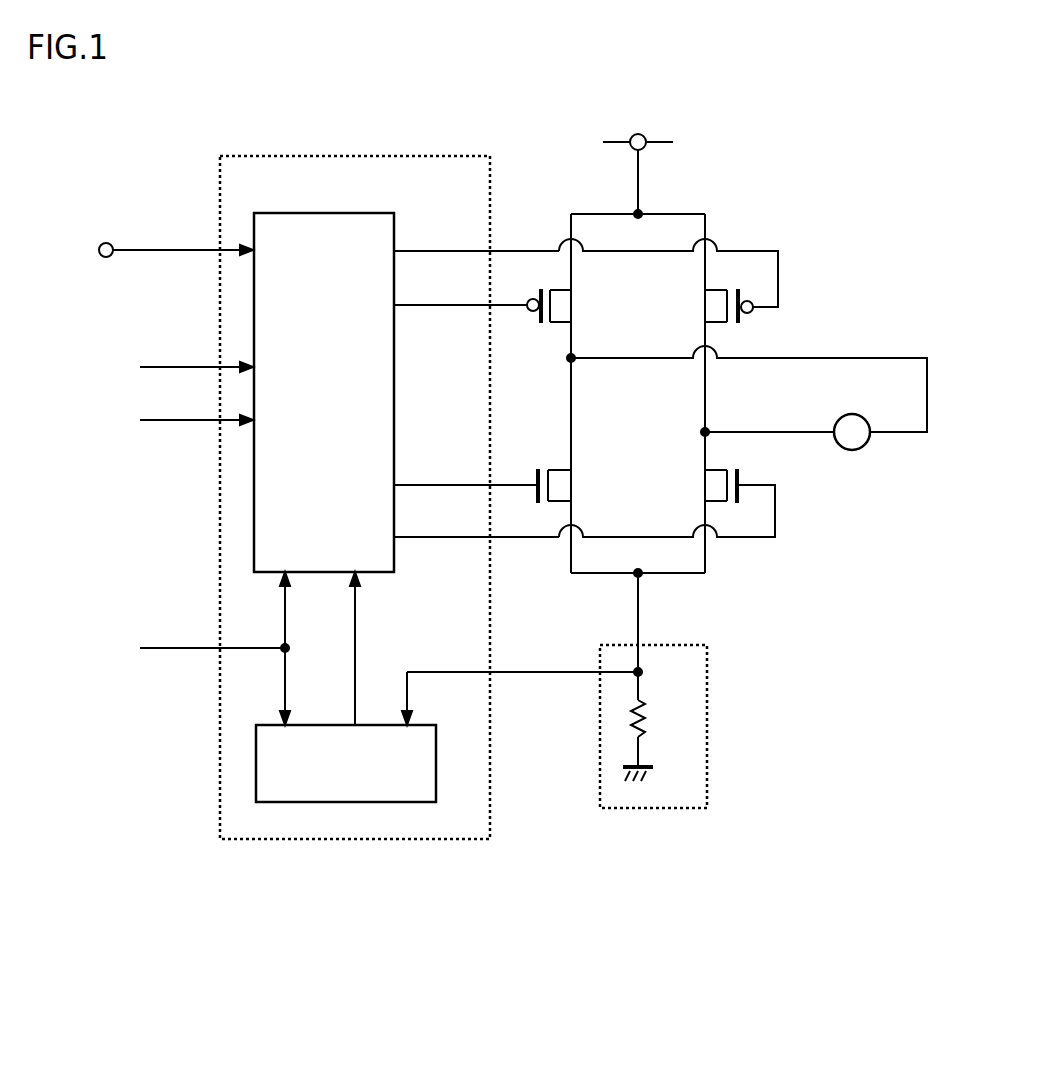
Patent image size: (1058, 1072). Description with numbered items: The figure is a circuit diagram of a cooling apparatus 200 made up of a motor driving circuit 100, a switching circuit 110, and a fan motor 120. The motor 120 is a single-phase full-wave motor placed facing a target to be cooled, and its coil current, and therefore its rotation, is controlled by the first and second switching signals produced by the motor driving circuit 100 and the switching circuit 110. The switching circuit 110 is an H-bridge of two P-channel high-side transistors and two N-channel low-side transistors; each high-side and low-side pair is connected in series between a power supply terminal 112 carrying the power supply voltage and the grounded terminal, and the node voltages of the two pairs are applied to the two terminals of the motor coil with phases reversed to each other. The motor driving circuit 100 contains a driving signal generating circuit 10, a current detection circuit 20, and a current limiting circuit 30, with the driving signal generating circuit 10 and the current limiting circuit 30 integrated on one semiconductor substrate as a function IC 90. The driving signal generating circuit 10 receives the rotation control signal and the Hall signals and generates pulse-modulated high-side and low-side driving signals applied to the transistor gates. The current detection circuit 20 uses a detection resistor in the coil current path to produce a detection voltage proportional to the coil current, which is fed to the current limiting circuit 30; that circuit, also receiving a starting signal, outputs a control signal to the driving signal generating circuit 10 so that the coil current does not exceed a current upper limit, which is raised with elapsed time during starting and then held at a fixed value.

The driving signal generating circuit 10 is at (323, 213).
The current detection circuit 20 is at (650, 808).
The current limiting circuit 30 is at (256, 765).
The function IC 90 is at (352, 839).
The motor driving circuit 100 is at (705, 898).
The switching circuit 110 is at (530, 586).
The power supply terminal 112 is at (643, 150).
The fan motor 120 is at (856, 449).
The cooling apparatus 200 is at (520, 1034).